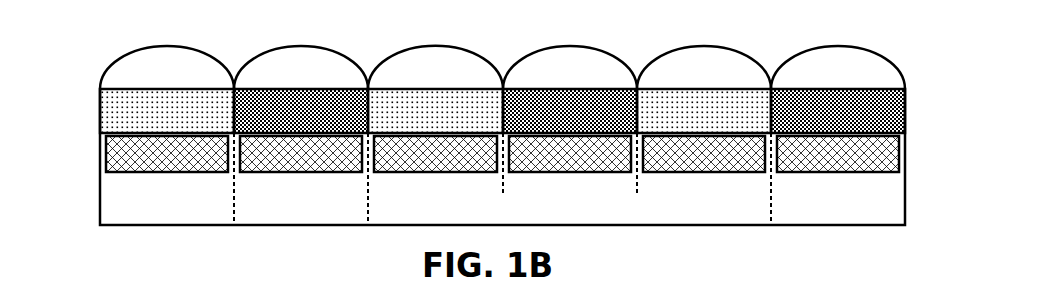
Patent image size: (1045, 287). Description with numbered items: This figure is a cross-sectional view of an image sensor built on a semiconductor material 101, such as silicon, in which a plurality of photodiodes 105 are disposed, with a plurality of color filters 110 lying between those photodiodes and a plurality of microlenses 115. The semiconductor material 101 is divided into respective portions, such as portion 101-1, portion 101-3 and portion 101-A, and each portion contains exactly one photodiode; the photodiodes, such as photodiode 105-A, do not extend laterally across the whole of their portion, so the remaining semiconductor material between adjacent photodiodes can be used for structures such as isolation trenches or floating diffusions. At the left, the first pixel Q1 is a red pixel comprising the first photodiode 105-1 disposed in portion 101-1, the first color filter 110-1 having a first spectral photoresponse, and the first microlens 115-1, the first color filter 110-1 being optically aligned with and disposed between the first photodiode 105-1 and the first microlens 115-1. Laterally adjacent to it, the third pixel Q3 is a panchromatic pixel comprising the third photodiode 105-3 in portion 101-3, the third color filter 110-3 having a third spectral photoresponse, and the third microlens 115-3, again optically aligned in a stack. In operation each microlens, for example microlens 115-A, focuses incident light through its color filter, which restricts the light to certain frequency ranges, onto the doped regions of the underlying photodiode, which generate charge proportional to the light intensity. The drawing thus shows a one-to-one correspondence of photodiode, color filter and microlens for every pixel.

The semiconductor material 101 is at (502, 157).
The portion of semiconductor material 101-1 is at (232, 189).
The portion of semiconductor material 101-3 is at (366, 189).
The portion of semiconductor material 101-A is at (903, 189).
The plurality of photodiodes 105 is at (96, 137).
The first photodiode 105-1 is at (167, 154).
The third photodiode 105-3 is at (301, 154).
The photodiode 105-A is at (838, 154).
The plurality of color filters 110 is at (96, 91).
The first color filter 110-1 is at (167, 111).
The third color filter 110-3 is at (301, 111).
The plurality of microlenses 115 is at (96, 48).
The first microlens 115-1 is at (167, 67).
The third microlens 115-3 is at (301, 67).
The microlens 115-A is at (838, 67).
The first pixel Q1 is at (233, 45).
The third pixel Q3 is at (366, 45).